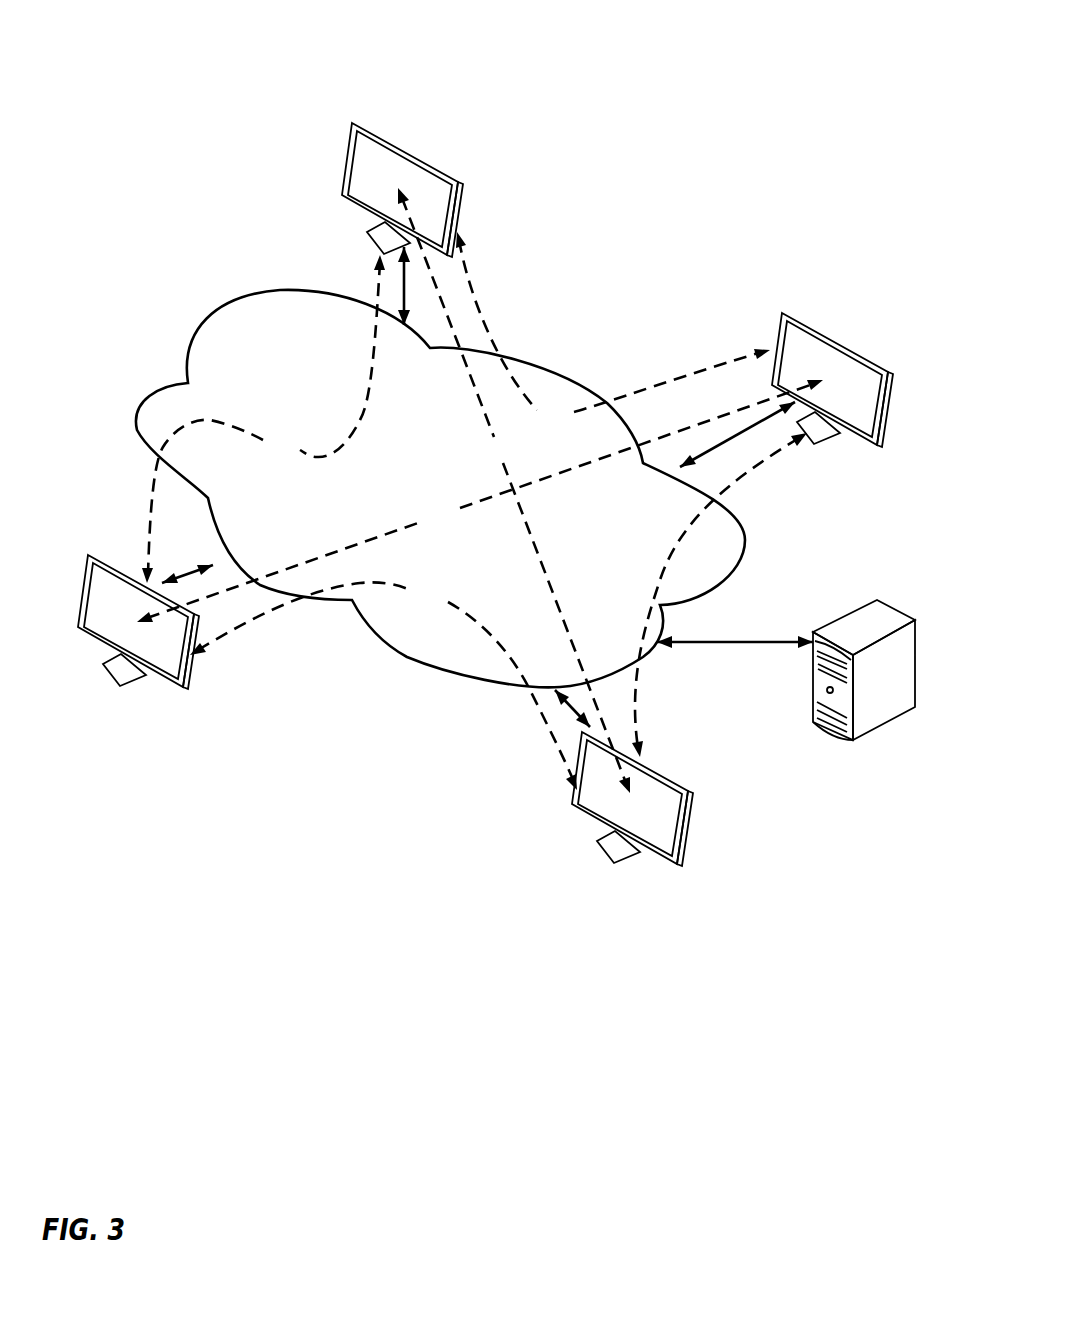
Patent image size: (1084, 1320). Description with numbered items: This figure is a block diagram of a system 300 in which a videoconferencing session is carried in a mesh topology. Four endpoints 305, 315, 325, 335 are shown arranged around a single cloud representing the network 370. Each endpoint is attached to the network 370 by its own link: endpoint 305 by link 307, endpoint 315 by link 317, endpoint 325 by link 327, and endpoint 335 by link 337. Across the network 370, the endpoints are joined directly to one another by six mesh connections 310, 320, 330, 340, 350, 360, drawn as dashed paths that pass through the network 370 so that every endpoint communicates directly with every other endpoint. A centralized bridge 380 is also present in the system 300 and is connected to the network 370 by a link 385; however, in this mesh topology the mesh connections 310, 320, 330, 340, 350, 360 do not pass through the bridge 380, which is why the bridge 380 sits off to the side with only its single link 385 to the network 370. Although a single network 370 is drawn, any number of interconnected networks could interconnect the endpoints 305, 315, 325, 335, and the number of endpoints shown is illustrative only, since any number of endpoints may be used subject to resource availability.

The system 300 is at (636, 46).
The endpoint 305 is at (407, 153).
The link 307 is at (404, 287).
The mesh connection 310 is at (263, 419).
The endpoint 315 is at (823, 338).
The link 317 is at (728, 443).
The mesh connection 320 is at (480, 501).
The endpoint 325 is at (683, 833).
The link 327 is at (573, 712).
The mesh connection 330 is at (383, 685).
The endpoint 335 is at (181, 688).
The link 337 is at (188, 575).
The mesh connection 340 is at (719, 595).
The mesh connection 350 is at (613, 332).
The mesh connection 360 is at (514, 490).
The network 370 is at (225, 298).
The centralized bridge 380 is at (877, 600).
The link 385 is at (735, 641).